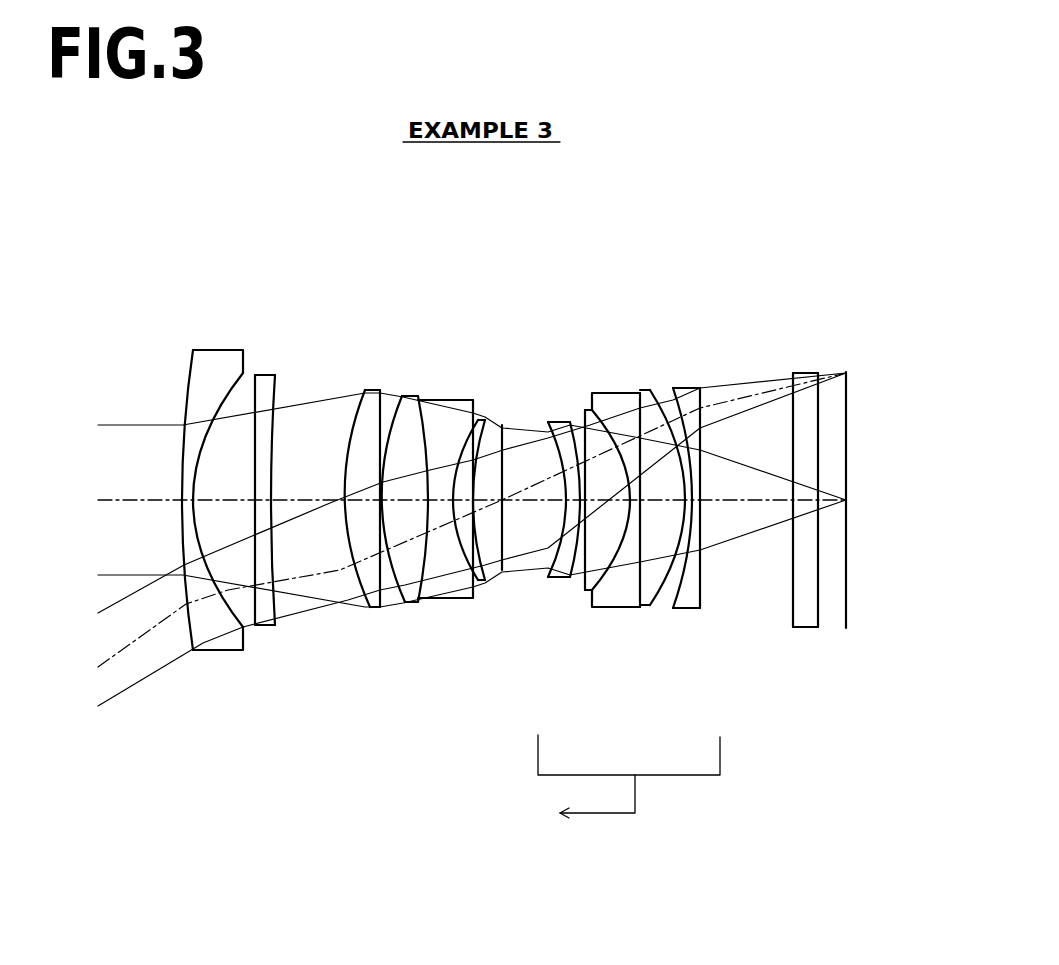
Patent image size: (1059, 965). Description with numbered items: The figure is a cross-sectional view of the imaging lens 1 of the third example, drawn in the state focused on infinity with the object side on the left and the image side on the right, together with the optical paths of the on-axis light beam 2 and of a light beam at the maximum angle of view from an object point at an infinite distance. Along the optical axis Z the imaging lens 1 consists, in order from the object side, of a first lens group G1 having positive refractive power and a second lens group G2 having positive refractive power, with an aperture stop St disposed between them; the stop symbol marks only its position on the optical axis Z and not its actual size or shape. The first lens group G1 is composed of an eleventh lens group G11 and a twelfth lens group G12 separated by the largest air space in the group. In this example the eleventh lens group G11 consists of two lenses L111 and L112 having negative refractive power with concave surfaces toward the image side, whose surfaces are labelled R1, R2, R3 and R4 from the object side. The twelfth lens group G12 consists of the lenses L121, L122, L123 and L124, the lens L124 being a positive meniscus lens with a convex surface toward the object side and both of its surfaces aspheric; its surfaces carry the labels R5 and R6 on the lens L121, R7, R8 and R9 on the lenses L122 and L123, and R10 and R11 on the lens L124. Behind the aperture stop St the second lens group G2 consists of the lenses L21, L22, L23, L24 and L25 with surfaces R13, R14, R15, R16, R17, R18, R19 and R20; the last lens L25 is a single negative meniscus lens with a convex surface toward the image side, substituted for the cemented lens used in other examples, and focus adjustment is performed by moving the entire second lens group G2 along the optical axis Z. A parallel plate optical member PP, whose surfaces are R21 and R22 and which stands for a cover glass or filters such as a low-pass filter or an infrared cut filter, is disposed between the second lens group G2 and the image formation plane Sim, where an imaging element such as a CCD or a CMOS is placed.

The imaging lens 1 is at (532, 210).
The on-axis light beam 2 is at (95, 612).
The optical axis Z is at (116, 497).
The first lens group G1 is at (497, 240).
The eleventh lens group G11 is at (293, 278).
The twelfth lens group G12 is at (497, 278).
The second lens group G2 is at (722, 243).
The lens L111 is at (216, 367).
The lens L112 is at (262, 382).
The lens L121 is at (372, 398).
The lens L122 is at (412, 400).
The lens L123 is at (447, 398).
The positive meniscus lens L124 is at (478, 416).
The lens L21 is at (555, 422).
The lens L22 is at (587, 410).
The lens L23 is at (612, 393).
The lens L24 is at (655, 392).
The negative meniscus lens L25 is at (690, 388).
The aperture stop St is at (508, 428).
The parallel plate optical member PP is at (803, 392).
The image formation plane Sim is at (848, 380).
The lens surface R1 is at (186, 625).
The lens surface R2 is at (232, 614).
The lens surface R3 is at (255, 622).
The lens surface R4 is at (274, 620).
The lens surface R5 is at (352, 592).
The lens surface R6 is at (381, 608).
The lens surface R7 is at (404, 604).
The lens surface R8 is at (418, 601).
The lens surface R9 is at (473, 599).
The lens surface R10 is at (478, 582).
The lens surface R11 is at (487, 581).
The lens surface R13 is at (548, 579).
The lens surface R14 is at (569, 579).
The lens surface R15 is at (586, 592).
The lens surface R16 is at (600, 592).
The lens surface R17 is at (643, 607).
The lens surface R18 is at (658, 606).
The lens surface R19 is at (678, 609).
The lens surface R20 is at (702, 609).
The optical member surface R21 is at (790, 622).
The optical member surface R22 is at (820, 611).